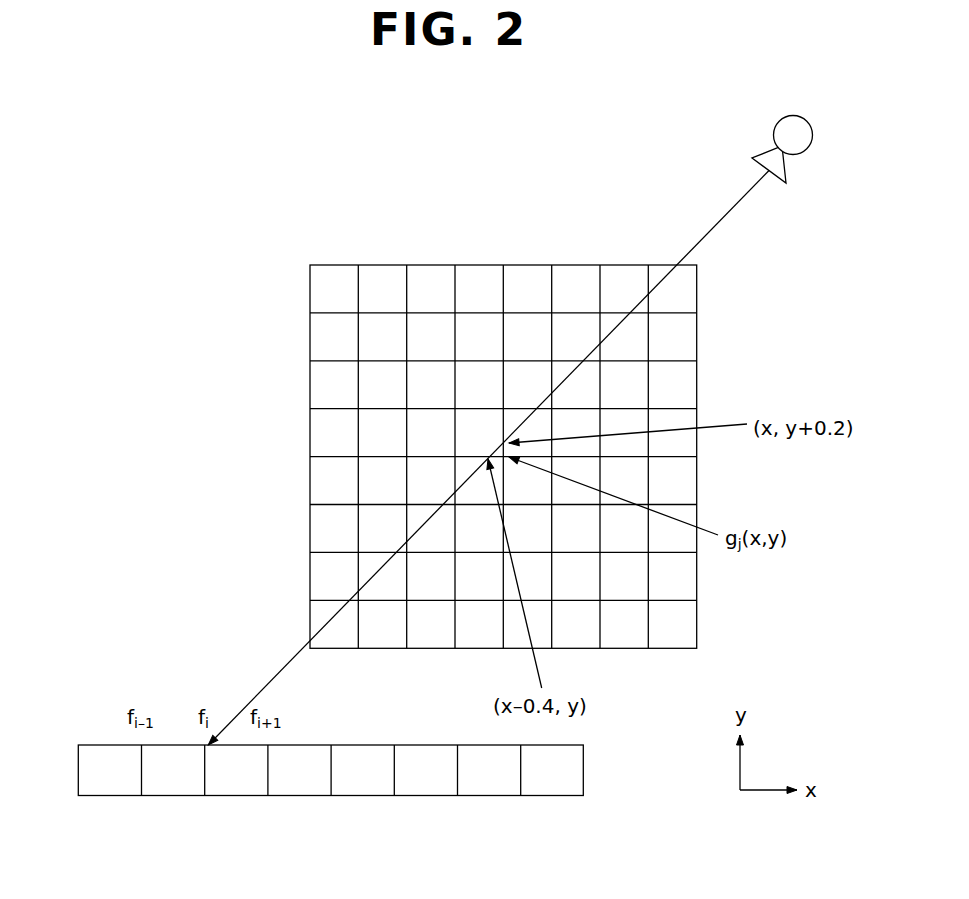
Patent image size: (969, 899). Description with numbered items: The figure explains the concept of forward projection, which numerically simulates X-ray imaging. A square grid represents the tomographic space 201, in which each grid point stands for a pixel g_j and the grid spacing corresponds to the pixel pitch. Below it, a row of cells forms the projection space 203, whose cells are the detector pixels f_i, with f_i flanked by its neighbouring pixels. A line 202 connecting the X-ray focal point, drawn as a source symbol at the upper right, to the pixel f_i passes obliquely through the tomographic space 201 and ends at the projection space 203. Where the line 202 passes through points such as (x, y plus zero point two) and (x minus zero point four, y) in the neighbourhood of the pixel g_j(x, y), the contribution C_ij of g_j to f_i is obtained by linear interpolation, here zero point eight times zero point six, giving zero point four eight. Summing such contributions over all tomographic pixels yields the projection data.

The tomographic space 201 is at (697, 610).
The line 202 is at (719, 222).
The projection space 203 is at (355, 796).